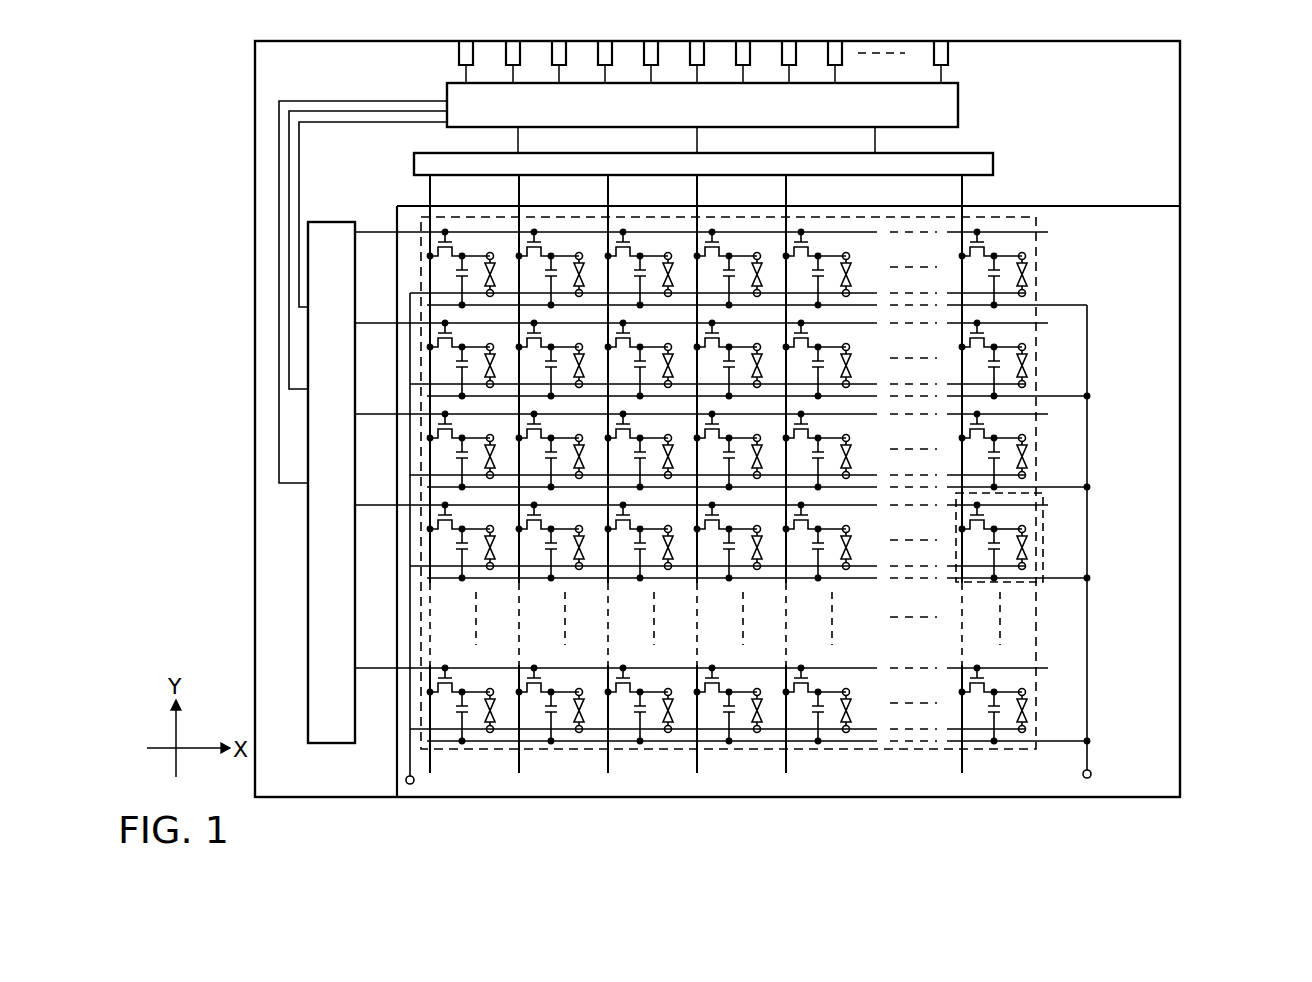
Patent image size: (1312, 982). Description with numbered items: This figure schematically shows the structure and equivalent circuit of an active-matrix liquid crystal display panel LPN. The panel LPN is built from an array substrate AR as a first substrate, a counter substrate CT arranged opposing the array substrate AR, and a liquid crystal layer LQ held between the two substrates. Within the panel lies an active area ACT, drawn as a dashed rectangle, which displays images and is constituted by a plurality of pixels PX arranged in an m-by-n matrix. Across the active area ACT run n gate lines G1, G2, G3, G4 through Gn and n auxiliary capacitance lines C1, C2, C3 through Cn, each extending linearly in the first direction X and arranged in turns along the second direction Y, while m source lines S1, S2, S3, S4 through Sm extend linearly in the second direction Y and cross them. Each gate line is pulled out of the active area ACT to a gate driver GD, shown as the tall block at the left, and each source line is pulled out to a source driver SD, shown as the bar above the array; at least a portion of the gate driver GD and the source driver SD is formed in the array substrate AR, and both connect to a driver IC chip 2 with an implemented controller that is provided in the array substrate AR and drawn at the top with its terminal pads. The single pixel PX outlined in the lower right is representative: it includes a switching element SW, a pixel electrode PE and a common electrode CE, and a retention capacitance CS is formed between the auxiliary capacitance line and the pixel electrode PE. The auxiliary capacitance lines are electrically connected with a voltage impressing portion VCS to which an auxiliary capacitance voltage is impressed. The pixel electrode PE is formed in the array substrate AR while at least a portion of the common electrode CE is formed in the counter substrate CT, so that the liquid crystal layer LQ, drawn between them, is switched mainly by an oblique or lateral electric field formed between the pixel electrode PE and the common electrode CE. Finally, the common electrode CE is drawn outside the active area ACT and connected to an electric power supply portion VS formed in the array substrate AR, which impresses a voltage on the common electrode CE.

The liquid crystal display panel LPN is at (1200, 62).
The driver IC chip 2 is at (958, 103).
The source driver SD is at (993, 163).
The gate driver GD is at (308, 602).
The counter substrate CT is at (1125, 206).
The array substrate AR is at (333, 797).
The active area ACT is at (1036, 330).
The source line S1 is at (431, 195).
The source line S2 is at (520, 195).
The source line S3 is at (609, 195).
The source line S4 is at (698, 195).
The source line Sm is at (963, 192).
The gate line G1 is at (374, 232).
The gate line G2 is at (374, 323).
The gate line G3 is at (374, 414).
The gate line G4 is at (374, 505).
The gate line Gn is at (374, 668).
The auxiliary capacitance line C1 is at (1062, 305).
The auxiliary capacitance line C2 is at (1062, 396).
The auxiliary capacitance line C3 is at (1062, 487).
The auxiliary capacitance line Cn is at (1062, 741).
The pixel PX is at (1030, 584).
The switching element SW is at (954, 514).
The retention capacitance CS is at (982, 546).
The pixel electrode PE is at (1026, 527).
The liquid crystal layer LQ is at (1028, 541).
The common electrode CE is at (1026, 566).
The electric power supply portion VS is at (413, 784).
The voltage impressing portion VCS is at (1091, 772).